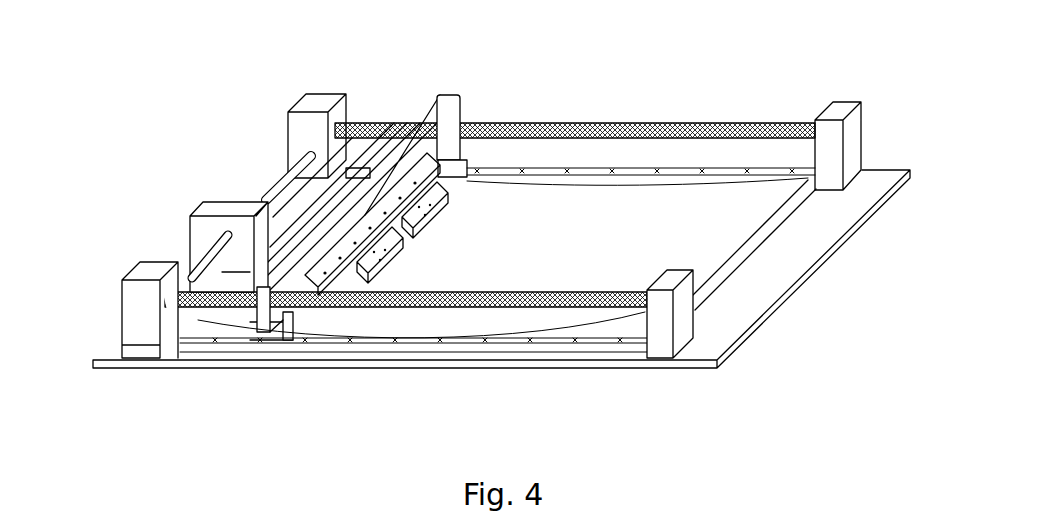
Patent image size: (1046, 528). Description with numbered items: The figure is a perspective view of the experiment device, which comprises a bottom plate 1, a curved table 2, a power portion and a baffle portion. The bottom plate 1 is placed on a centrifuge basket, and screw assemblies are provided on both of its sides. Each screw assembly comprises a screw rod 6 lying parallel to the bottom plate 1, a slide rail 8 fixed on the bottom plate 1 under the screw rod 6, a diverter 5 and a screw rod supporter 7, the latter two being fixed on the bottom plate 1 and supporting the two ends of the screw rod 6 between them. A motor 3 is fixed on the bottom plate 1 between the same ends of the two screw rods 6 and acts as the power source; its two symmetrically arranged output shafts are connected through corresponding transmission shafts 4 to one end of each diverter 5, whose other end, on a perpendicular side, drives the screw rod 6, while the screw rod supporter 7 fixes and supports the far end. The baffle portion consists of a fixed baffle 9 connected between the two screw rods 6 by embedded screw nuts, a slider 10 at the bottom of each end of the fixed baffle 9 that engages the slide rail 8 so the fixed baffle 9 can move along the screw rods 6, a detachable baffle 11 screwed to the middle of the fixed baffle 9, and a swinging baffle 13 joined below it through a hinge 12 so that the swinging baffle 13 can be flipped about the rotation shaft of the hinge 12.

The bottom plate 1 is at (828, 225).
The curved table 2 is at (742, 251).
The motor 3 is at (225, 210).
The transmission shaft 4 is at (292, 180).
The diverter 5 is at (322, 102).
The screw rod 6 is at (668, 122).
The screw rod supporter 7 is at (850, 105).
The slide rail 8 is at (612, 343).
The fixed baffle 9 is at (440, 92).
The slider 10 is at (265, 322).
The detachable baffle 11 is at (358, 300).
The hinge 12 is at (478, 165).
The swinging baffle 13 is at (390, 278).